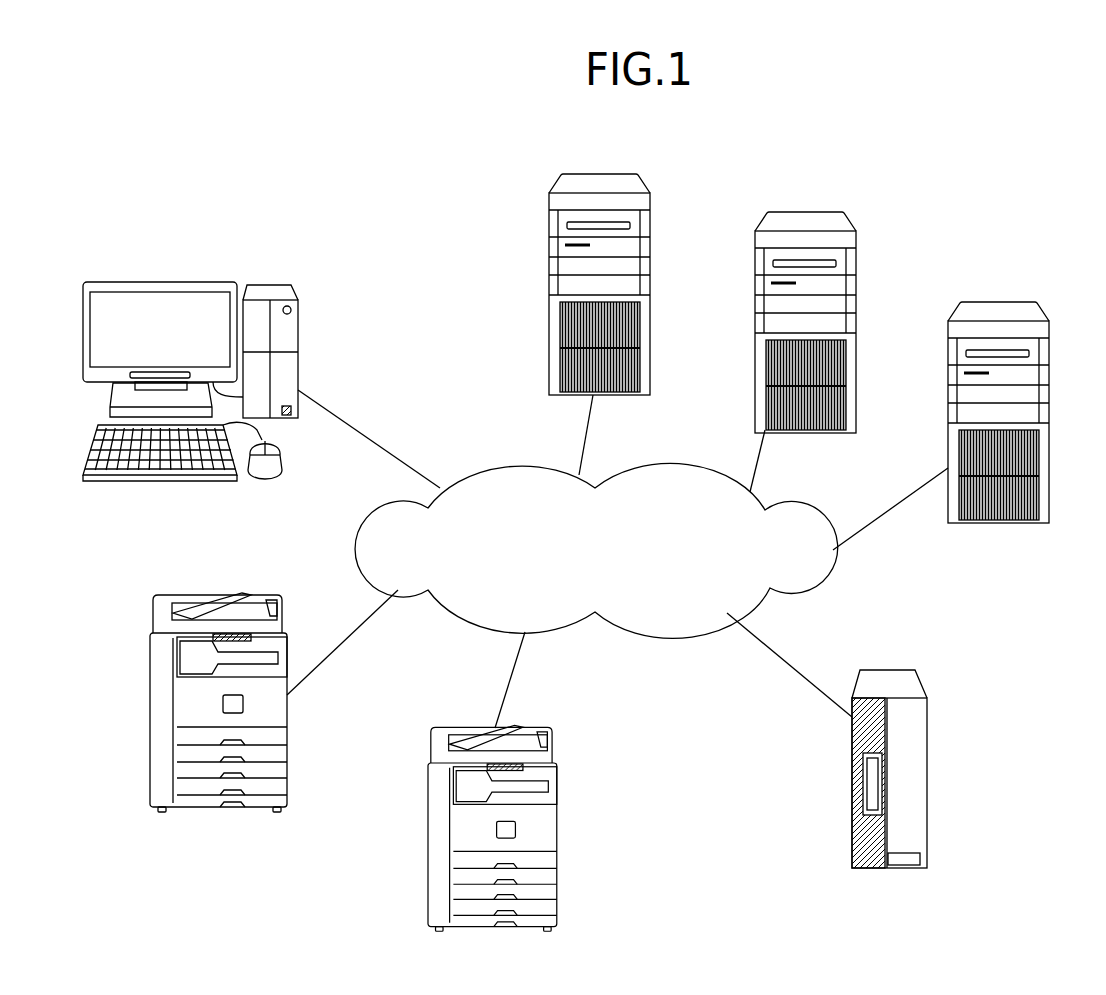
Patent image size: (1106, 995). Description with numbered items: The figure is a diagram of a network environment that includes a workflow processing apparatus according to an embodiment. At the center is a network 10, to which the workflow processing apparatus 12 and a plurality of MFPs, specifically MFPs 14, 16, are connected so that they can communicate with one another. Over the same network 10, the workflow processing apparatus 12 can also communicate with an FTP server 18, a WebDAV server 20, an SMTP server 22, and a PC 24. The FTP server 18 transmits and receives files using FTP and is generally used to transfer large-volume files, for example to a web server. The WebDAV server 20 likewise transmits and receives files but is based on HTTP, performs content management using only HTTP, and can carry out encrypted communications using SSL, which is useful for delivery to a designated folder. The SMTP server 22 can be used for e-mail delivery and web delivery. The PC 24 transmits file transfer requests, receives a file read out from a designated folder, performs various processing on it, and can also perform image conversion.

The network 10 is at (818, 577).
The workflow processing apparatus 12 is at (918, 868).
The MFP 14 is at (150, 732).
The MFP 16 is at (428, 868).
The FTP server 18 is at (620, 172).
The WebDAV server 20 is at (835, 212).
The SMTP server 22 is at (1023, 302).
The PC 24 is at (273, 285).